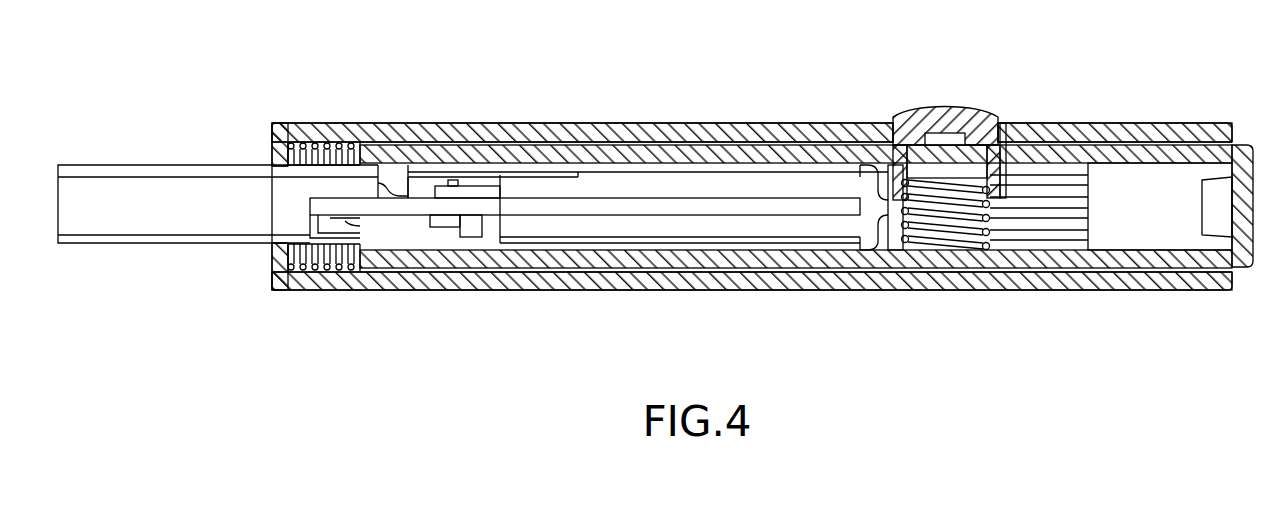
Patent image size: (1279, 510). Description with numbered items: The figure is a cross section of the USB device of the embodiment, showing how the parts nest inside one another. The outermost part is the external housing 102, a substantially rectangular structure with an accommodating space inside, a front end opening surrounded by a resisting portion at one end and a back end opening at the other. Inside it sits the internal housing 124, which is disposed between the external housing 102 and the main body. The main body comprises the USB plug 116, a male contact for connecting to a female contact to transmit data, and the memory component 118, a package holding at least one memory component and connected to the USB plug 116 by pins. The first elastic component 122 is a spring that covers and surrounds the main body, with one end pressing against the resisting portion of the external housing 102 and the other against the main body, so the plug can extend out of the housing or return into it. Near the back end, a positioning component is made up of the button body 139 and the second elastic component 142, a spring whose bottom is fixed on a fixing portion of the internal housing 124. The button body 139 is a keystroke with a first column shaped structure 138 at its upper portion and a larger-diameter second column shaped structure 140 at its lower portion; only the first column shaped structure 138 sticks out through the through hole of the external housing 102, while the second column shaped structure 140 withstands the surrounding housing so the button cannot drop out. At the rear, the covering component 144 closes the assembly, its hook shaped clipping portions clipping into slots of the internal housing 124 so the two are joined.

The external housing 102 is at (624, 128).
The USB plug 116 is at (128, 187).
The memory component 118 is at (712, 208).
The first elastic component 122 is at (318, 147).
The internal housing 124 is at (713, 157).
The first column shaped structure 138 is at (950, 121).
The button body 139 is at (961, 109).
The second column shaped structure 140 is at (1011, 170).
The second elastic component 142 is at (905, 230).
The covering component 144 is at (1238, 146).